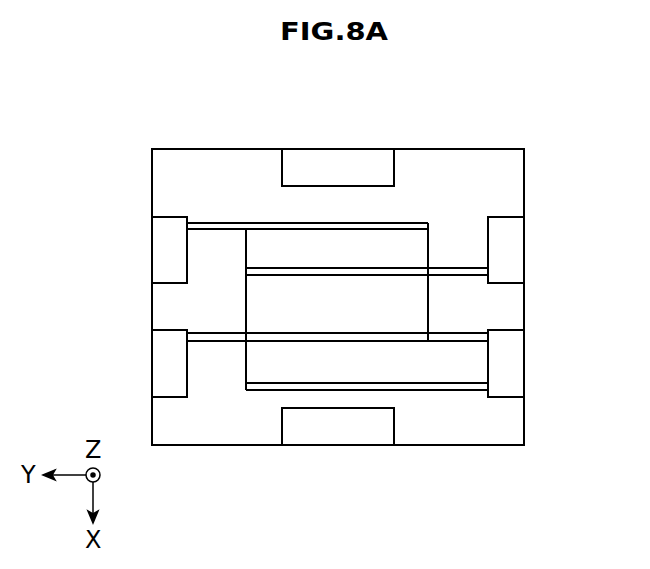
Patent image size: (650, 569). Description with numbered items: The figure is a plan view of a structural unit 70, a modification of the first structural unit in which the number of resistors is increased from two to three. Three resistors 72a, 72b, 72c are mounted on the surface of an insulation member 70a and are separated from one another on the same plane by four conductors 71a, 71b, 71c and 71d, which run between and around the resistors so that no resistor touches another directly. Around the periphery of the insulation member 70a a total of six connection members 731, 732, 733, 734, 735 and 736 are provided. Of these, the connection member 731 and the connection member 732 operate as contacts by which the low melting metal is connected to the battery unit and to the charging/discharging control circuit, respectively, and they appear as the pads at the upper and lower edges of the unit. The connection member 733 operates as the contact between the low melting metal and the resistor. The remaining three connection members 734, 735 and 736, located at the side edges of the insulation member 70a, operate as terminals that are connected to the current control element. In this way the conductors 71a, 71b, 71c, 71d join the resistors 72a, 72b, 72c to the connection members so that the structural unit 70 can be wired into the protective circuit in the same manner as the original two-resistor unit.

The structural unit 70 is at (600, 101).
The insulation member 70a is at (515, 417).
The conductor 71a is at (470, 388).
The conductor 71b is at (227, 340).
The conductor 71c is at (453, 272).
The conductor 71d is at (217, 229).
The resistor 72a is at (322, 370).
The resistor 72b is at (273, 310).
The resistor 72c is at (265, 243).
The connection member 731 is at (348, 168).
The connection member 732 is at (386, 436).
The connection member 733 is at (513, 362).
The connection member 734 is at (160, 361).
The connection member 735 is at (515, 243).
The connection member 736 is at (160, 243).